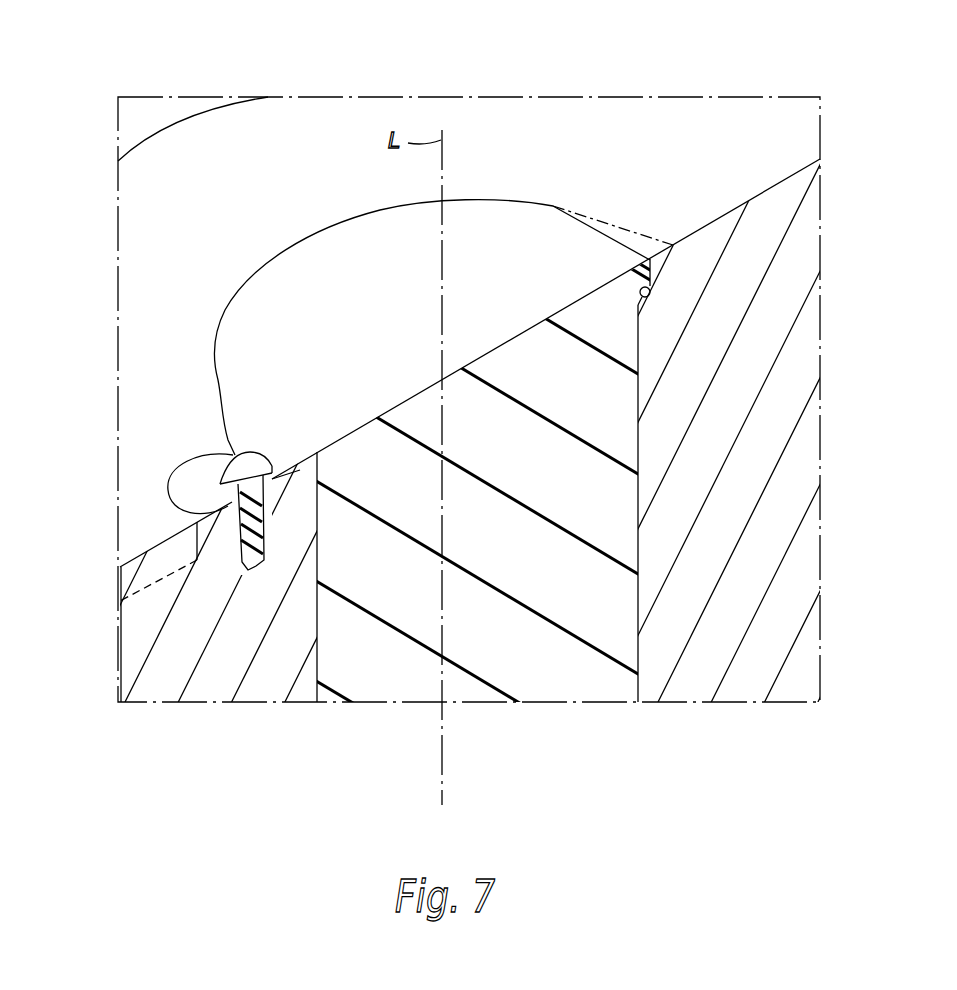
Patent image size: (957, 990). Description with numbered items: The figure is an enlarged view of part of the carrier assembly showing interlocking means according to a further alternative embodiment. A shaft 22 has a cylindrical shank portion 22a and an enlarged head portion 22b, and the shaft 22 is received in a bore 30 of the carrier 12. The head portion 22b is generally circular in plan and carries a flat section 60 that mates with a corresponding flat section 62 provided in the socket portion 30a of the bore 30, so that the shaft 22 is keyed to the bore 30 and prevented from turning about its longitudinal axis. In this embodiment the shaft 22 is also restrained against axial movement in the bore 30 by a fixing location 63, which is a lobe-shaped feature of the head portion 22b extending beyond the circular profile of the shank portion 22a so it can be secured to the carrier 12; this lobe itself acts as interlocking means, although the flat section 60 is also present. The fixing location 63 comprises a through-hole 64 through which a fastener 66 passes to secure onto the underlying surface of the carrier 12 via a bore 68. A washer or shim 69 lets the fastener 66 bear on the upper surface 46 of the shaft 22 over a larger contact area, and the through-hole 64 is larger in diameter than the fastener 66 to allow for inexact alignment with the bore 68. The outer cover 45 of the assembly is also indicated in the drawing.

The carrier 12 is at (778, 531).
The shaft 22 is at (372, 668).
The shank portion 22a is at (108, 612).
The head portion 22b is at (108, 570).
The bore 30 is at (632, 672).
The socket portion 30a is at (650, 294).
The cover 45 is at (332, 150).
The upper surface 46 is at (272, 300).
The flat section 60 is at (620, 244).
The flat section 62 is at (624, 250).
The fixing location 63 is at (158, 466).
The through-hole 64 is at (307, 473).
The fastener 66 is at (232, 446).
The bore 68 is at (248, 563).
The washer or shim 69 is at (278, 462).